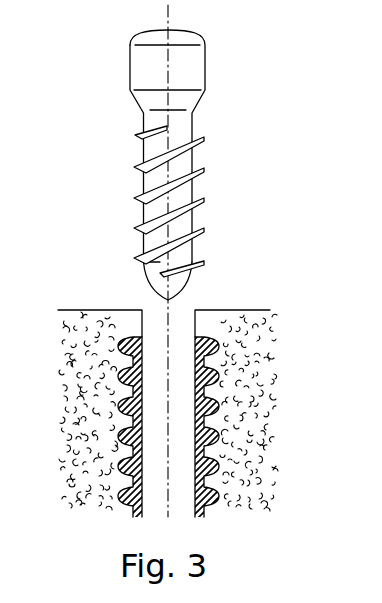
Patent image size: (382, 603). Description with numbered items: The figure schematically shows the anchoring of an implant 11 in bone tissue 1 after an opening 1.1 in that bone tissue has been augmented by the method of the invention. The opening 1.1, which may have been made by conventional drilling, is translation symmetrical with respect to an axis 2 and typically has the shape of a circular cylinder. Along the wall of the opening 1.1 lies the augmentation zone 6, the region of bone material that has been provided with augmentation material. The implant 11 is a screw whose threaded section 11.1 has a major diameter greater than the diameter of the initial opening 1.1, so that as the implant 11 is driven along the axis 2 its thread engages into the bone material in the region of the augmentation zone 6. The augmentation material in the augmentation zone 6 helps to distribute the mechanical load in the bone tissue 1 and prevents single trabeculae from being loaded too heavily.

The bone tissue 1 is at (252, 308).
The opening 1.1 is at (153, 306).
The axis 2 is at (168, 498).
The augmentation zone 6 is at (222, 393).
The implant 11 is at (128, 66).
The threaded section 11.1 is at (214, 130).